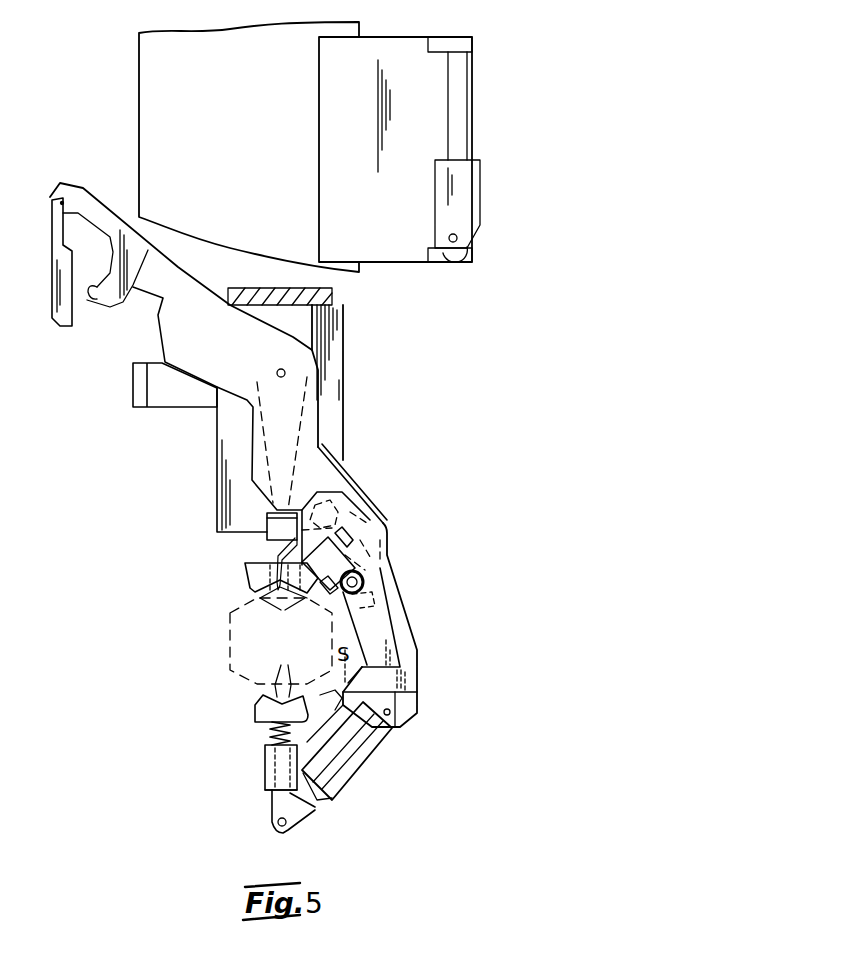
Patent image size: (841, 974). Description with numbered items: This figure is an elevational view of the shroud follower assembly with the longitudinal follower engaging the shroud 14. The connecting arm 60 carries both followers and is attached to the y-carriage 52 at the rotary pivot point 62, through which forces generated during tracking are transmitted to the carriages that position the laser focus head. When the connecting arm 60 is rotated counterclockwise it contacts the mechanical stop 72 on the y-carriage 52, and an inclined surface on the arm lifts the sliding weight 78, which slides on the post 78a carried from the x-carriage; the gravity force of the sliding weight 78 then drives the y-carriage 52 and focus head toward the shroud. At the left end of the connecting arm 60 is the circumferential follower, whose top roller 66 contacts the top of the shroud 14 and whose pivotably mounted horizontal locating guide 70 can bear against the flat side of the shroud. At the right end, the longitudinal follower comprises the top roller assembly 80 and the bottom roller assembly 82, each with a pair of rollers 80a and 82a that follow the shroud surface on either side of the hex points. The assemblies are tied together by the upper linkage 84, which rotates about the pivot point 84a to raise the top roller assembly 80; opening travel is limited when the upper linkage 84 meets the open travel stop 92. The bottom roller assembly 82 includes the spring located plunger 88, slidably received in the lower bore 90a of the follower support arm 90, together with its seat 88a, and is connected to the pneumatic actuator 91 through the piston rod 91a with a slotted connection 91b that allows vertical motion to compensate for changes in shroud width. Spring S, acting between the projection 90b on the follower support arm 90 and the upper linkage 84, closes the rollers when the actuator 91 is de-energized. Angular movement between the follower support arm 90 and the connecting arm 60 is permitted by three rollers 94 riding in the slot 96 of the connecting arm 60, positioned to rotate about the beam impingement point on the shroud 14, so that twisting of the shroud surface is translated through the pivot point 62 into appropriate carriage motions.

The sliding weight 78 is at (408, 37).
The post 78a is at (467, 80).
The connecting arm 60 is at (177, 267).
The top roller 66 is at (88, 288).
The horizontal locating guide 70 is at (72, 315).
The rotary pivot point 62 is at (285, 371).
The y-carriage 52 is at (343, 370).
The mechanical stop 72 is at (267, 513).
The slot 96 is at (262, 537).
The rollers 94 is at (348, 503).
The open travel stop 92 is at (348, 533).
The upper linkage 84 is at (378, 623).
The pivot point 84a is at (362, 592).
The follower support arm 90 is at (418, 643).
The lower bore 90a is at (268, 785).
The projection 90b is at (390, 726).
The top roller assembly 80 is at (245, 577).
The rollers 80a is at (282, 617).
The shroud 14 is at (230, 643).
The bottom roller assembly 82 is at (255, 710).
The rollers 82a is at (286, 670).
The spring located plunger 88 is at (268, 732).
The spring seat 88a is at (265, 755).
The pneumatic actuator 91 is at (362, 773).
The piston rod 91a is at (305, 808).
The slotted connection 91b is at (272, 826).